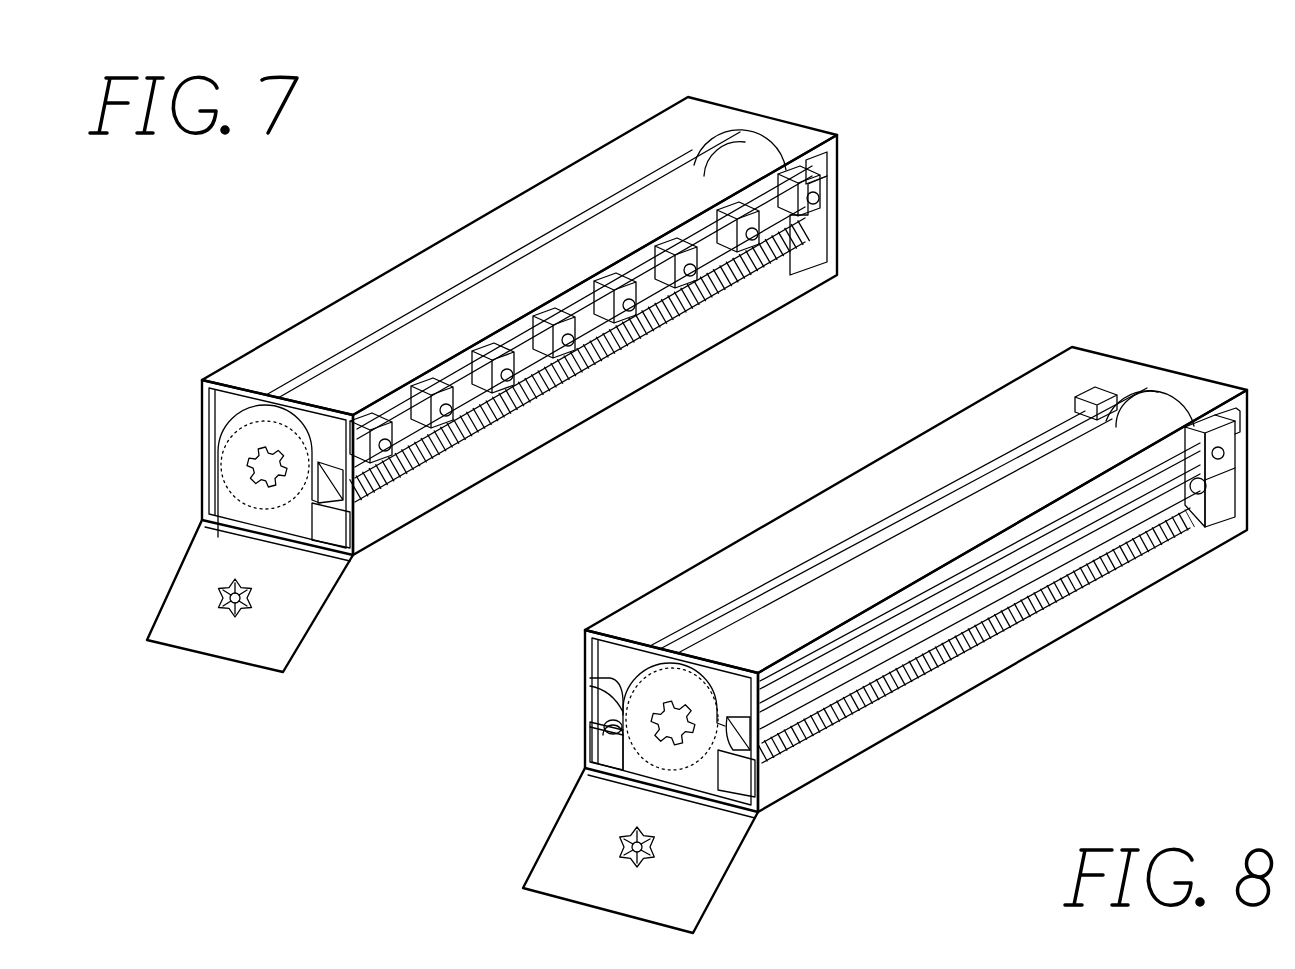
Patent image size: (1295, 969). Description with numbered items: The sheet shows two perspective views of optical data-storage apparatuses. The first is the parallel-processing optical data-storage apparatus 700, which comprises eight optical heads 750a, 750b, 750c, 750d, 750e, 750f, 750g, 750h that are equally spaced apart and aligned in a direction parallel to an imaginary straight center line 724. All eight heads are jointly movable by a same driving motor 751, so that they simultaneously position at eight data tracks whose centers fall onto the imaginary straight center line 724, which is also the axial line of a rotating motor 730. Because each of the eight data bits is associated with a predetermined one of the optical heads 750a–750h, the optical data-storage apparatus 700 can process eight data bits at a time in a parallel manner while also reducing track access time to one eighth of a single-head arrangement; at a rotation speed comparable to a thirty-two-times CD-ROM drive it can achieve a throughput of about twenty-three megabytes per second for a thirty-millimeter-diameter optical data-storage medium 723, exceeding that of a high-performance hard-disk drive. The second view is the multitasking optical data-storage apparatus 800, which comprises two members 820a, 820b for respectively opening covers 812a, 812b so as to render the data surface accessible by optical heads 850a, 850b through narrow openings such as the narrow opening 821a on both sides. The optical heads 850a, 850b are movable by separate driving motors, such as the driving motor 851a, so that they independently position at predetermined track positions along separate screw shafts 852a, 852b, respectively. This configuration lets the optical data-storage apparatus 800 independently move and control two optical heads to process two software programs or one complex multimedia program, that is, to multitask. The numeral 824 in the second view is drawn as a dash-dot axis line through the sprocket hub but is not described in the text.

In FIG. 7, the optical data-storage apparatus 700 is at (467, 188).
In FIG. 7, the optical data-storage medium 723 is at (430, 310).
In FIG. 7, the imaginary straight center line 724 is at (267, 467).
In FIG. 7, the rotating motor 730 is at (803, 160).
In FIG. 7, the optical head 750a is at (391, 445).
In FIG. 7, the optical head 750b is at (452, 410).
In FIG. 7, the optical head 750c is at (513, 375).
In FIG. 7, the optical head 750d is at (574, 340).
In FIG. 7, the optical head 750e is at (635, 305).
In FIG. 7, the optical head 750f is at (696, 270).
In FIG. 7, the optical head 750g is at (758, 234).
In FIG. 7, the optical head 750h is at (819, 199).
In FIG. 7, the driving motor 751 is at (815, 222).
In FIG. 8, the optical data-storage apparatus 800 is at (1063, 730).
In FIG. 8, the cover 812a is at (840, 688).
In FIG. 8, the cover 812b is at (610, 738).
In FIG. 8, the member 820a is at (762, 742).
In FIG. 8, the member 820b is at (600, 697).
In FIG. 8, the narrow opening 821a is at (875, 645).
In FIG. 8, the drive shaft / sprocket hub 824 is at (673, 723).
In FIG. 8, the optical head 850a is at (1225, 453).
In FIG. 8, the optical head 850b is at (1068, 403).
In FIG. 8, the driving motor 851a is at (1228, 473).
In FIG. 8, the screw shaft 852a is at (1082, 578).
In FIG. 8, the screw shaft 852b is at (613, 727).